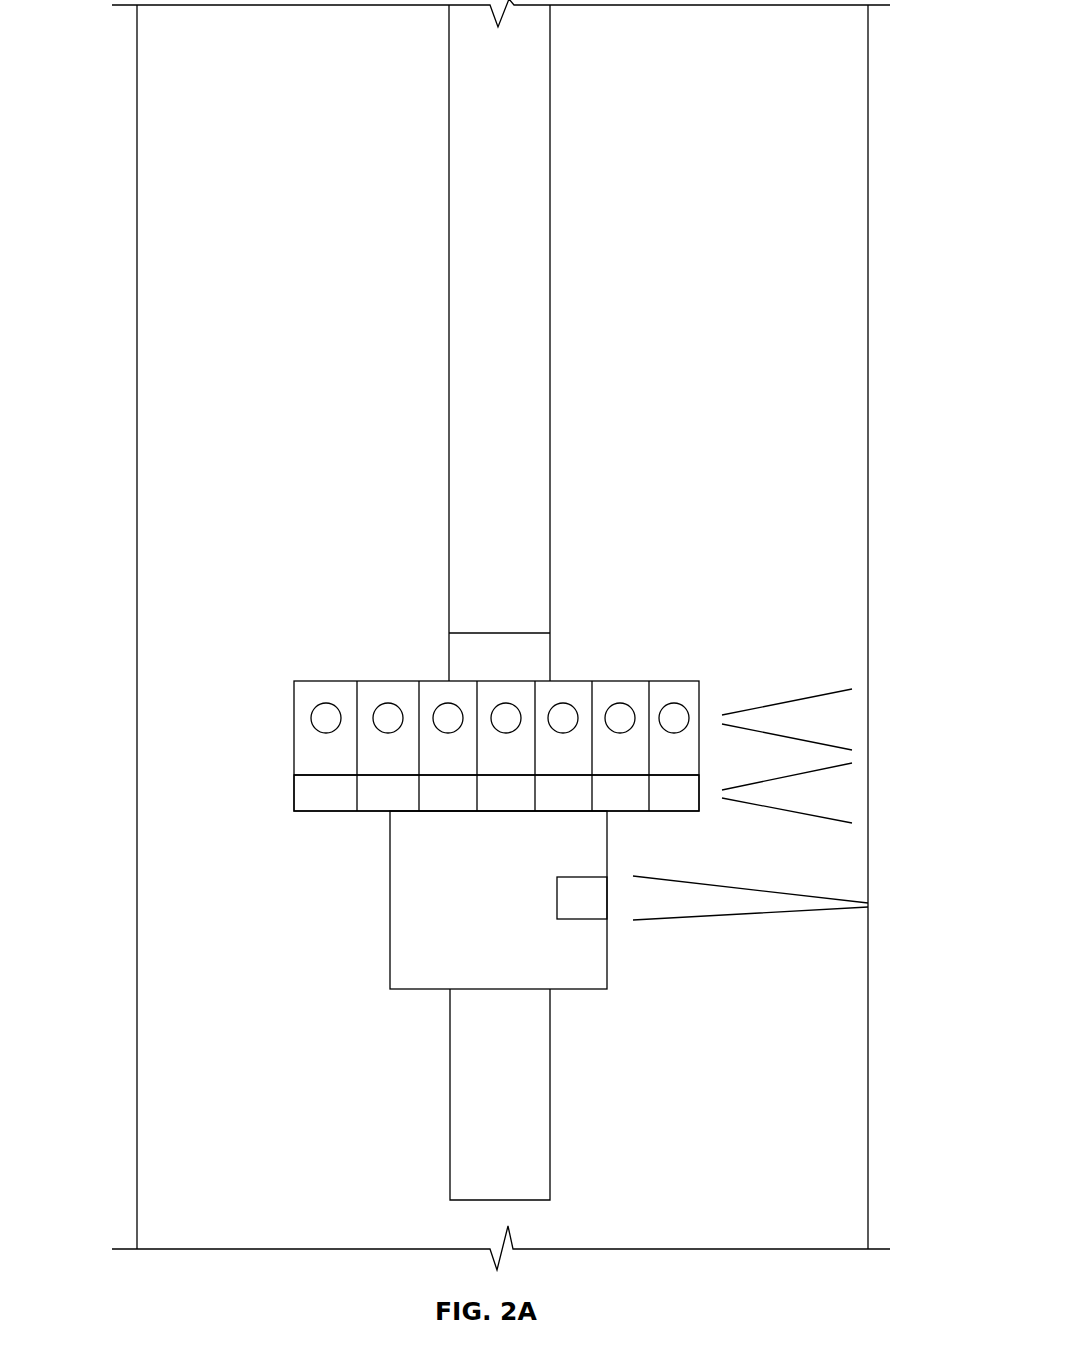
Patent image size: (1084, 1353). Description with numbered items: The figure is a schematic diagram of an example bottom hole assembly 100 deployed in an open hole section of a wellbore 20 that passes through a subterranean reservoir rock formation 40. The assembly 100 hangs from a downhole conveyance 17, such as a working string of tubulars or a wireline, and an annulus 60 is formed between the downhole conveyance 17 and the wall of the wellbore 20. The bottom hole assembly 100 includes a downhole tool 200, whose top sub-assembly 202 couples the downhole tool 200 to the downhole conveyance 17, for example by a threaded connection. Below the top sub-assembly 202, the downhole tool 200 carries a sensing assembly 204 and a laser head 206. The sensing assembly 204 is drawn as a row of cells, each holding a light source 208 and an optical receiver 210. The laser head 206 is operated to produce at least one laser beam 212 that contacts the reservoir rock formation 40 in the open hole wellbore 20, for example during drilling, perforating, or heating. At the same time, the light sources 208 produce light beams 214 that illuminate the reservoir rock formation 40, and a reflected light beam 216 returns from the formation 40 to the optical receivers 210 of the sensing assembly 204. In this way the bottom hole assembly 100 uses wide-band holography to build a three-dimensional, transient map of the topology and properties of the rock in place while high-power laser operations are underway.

The downhole conveyance 17 is at (550, 152).
The wellbore 20 is at (866, 497).
The subterranean formation 40 is at (78, 810).
The annulus 60 is at (848, 213).
The bottom hole assembly 100 is at (158, 734).
The downhole tool 200 is at (438, 796).
The top sub-assembly 202 is at (462, 661).
The sensing assembly 204 is at (286, 758).
The laser head 206 is at (384, 968).
The light sources 208 is at (672, 690).
The optical receivers 210 is at (377, 795).
The laser beam 212 is at (722, 902).
The light beams 214 is at (803, 710).
The reflected light beam 216 is at (803, 800).